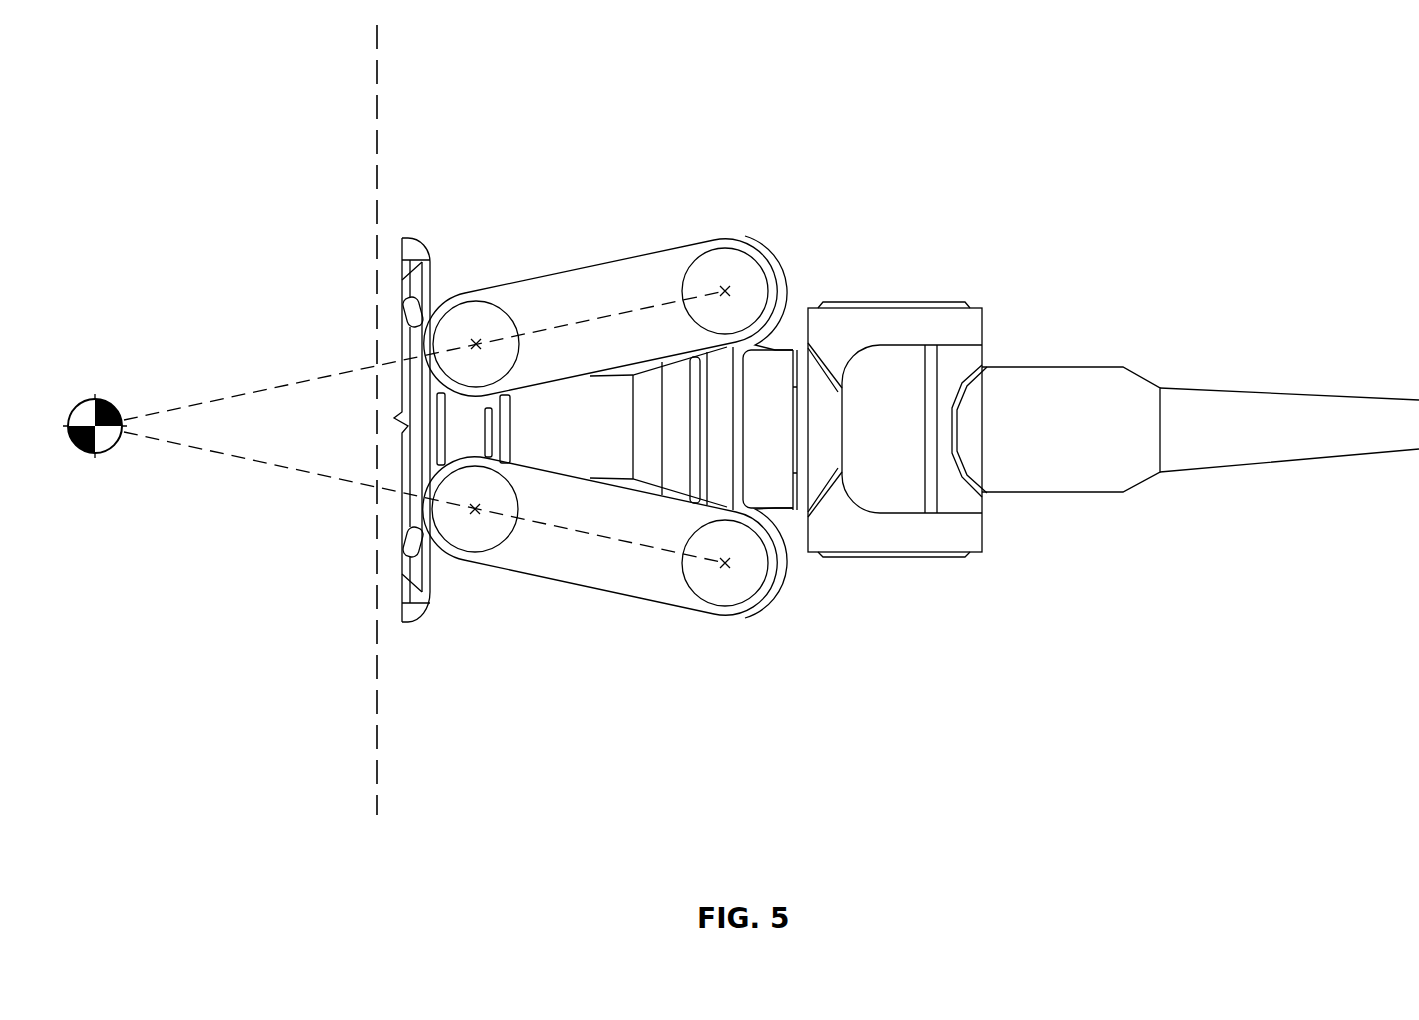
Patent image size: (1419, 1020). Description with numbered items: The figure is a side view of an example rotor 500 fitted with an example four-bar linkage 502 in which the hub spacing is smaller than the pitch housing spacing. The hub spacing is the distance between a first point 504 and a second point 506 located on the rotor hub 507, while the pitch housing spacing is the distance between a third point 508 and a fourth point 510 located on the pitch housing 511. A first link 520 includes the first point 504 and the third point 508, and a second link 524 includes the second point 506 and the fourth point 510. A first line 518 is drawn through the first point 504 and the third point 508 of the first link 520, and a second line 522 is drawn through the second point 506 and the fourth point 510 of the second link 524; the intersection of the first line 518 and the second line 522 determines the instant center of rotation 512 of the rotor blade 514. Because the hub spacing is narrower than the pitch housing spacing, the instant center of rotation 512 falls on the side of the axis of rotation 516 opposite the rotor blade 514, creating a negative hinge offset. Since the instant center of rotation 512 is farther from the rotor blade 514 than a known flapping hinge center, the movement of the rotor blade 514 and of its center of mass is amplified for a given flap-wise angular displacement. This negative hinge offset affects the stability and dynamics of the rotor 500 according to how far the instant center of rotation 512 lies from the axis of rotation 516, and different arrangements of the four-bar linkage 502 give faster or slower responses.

The rotor 500 is at (741, 121).
The four-bar linkage 502 is at (678, 222).
The first point 504 is at (476, 342).
The second point 506 is at (476, 512).
The rotor hub 507 is at (405, 625).
The third point 508 is at (726, 288).
The fourth point 510 is at (727, 566).
The pitch housing 511 is at (970, 322).
The instant center of rotation 512 is at (95, 398).
The rotor blade 514 is at (1262, 390).
The axis of rotation 516 is at (377, 138).
The first line 518 is at (600, 315).
The first link 520 is at (568, 327).
The second line 522 is at (545, 527).
The second link 524 is at (612, 582).